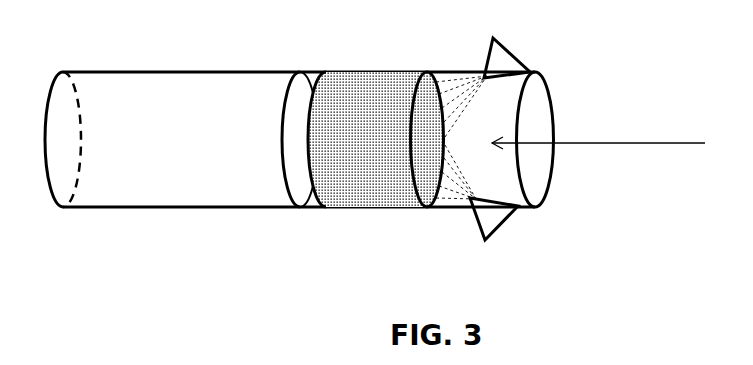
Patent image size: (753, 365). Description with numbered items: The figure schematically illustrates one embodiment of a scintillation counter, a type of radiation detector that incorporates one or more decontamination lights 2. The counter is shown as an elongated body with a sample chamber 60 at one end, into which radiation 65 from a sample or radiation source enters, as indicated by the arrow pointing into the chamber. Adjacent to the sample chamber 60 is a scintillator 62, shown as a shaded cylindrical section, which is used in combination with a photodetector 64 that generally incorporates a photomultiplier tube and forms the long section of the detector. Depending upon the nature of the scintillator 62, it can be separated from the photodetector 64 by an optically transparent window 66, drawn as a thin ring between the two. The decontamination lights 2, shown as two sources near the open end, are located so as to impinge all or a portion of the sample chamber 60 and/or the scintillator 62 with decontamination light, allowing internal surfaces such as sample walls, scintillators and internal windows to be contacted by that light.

The decontamination light 2 is at (503, 60).
The sample chamber 60 is at (532, 113).
The scintillator 62 is at (360, 80).
The photodetector 64 is at (180, 90).
The radiation 65 is at (600, 143).
The optically transparent window 66 is at (280, 83).